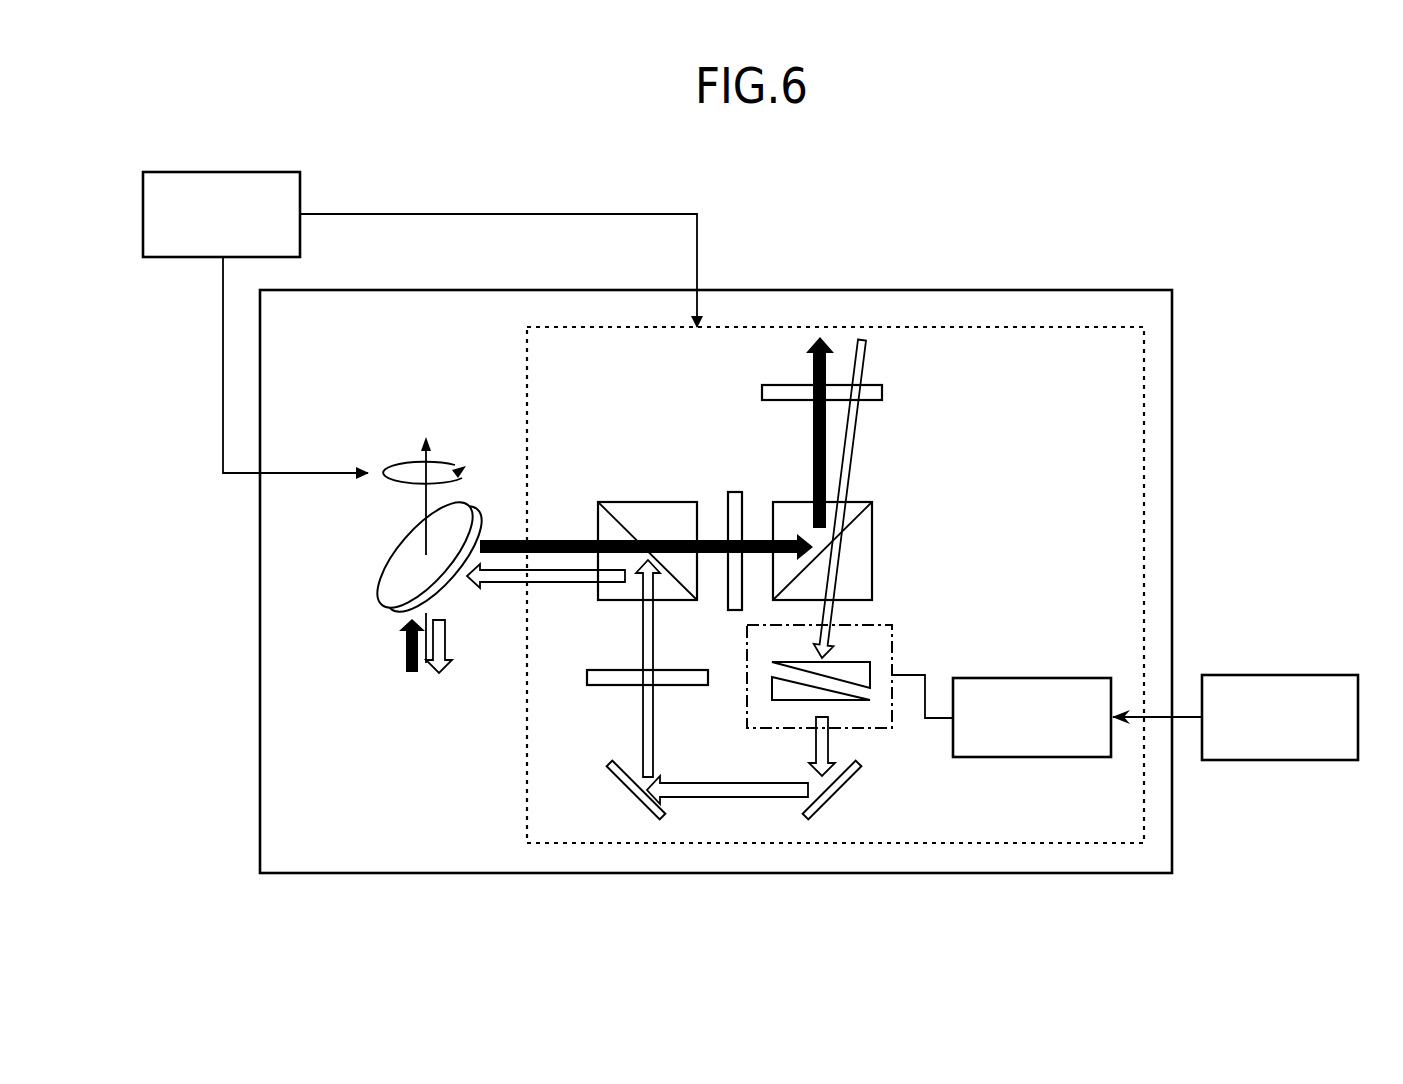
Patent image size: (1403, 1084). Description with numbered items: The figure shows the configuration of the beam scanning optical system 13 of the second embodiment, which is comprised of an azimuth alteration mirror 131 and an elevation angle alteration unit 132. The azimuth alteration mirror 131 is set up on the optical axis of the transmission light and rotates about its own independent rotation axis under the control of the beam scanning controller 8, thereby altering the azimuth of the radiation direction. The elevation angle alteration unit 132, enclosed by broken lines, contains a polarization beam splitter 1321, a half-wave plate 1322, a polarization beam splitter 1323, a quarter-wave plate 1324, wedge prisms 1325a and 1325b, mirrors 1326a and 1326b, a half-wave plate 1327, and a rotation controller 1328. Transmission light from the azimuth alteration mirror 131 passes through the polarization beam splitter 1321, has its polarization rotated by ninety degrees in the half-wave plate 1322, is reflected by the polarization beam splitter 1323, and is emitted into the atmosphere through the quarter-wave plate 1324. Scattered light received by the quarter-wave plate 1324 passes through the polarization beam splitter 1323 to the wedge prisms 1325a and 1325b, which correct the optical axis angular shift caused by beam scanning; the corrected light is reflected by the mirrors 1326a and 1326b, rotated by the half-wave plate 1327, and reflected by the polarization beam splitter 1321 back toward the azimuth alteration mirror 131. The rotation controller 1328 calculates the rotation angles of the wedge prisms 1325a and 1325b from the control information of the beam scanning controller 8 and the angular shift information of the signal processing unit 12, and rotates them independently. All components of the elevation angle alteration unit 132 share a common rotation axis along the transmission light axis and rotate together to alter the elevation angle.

The beam scanning controller 8 is at (249, 171).
The signal processing unit 12 is at (1303, 674).
The beam scanning optical system 13 is at (1106, 874).
The azimuth alteration mirror 131 is at (397, 556).
The elevation angle alteration unit 132 is at (1145, 353).
The polarization beam splitter 1321 is at (632, 500).
The half-wave plate 1322 is at (735, 491).
The polarization beam splitter 1323 is at (874, 505).
The quarter-wave plate 1324 is at (762, 392).
The wedge prism 1325a is at (875, 665).
The wedge prism 1325b is at (780, 702).
The mirror 1326a is at (851, 786).
The mirror 1326b is at (623, 785).
The half-wave plate 1327 is at (610, 670).
The rotation controller 1328 is at (1073, 677).